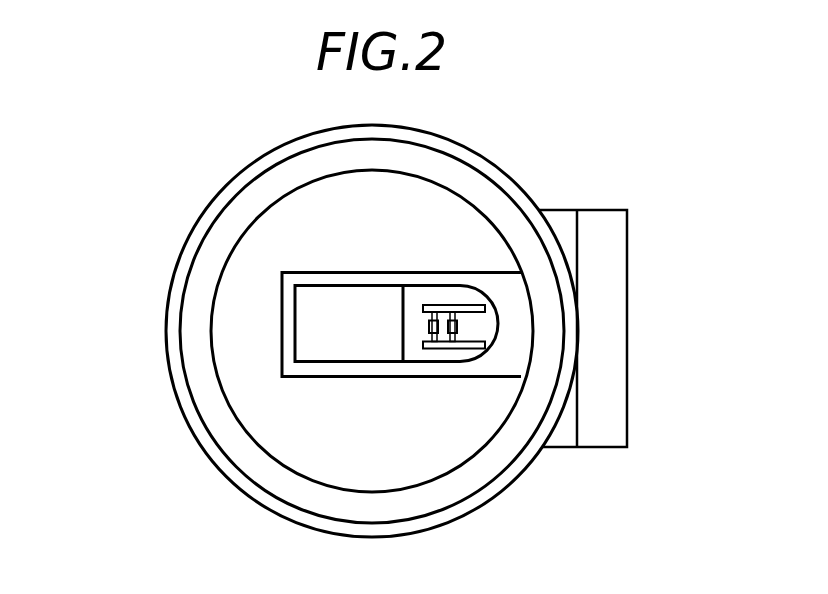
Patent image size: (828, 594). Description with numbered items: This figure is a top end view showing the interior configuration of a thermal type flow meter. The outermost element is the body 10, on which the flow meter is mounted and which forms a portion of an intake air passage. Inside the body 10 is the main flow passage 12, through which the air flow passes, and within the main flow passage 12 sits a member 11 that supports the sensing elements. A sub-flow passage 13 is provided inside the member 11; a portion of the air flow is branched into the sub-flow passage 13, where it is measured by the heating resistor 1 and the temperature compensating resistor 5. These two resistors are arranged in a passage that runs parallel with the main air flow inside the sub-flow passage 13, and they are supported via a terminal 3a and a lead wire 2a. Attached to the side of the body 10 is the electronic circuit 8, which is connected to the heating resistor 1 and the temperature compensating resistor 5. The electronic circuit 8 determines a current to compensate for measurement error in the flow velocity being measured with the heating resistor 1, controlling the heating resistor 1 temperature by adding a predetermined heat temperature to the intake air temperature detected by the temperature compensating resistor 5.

The heating resistor 1 is at (430, 328).
The lead wire 2a is at (430, 318).
The terminal 3a is at (450, 312).
The temperature compensating resistor 5 is at (452, 337).
The electronic circuit 8 is at (610, 298).
The body 10 is at (182, 282).
The member 11 is at (293, 342).
The main flow passage 12 is at (285, 235).
The sub-flow passage 13 is at (432, 345).